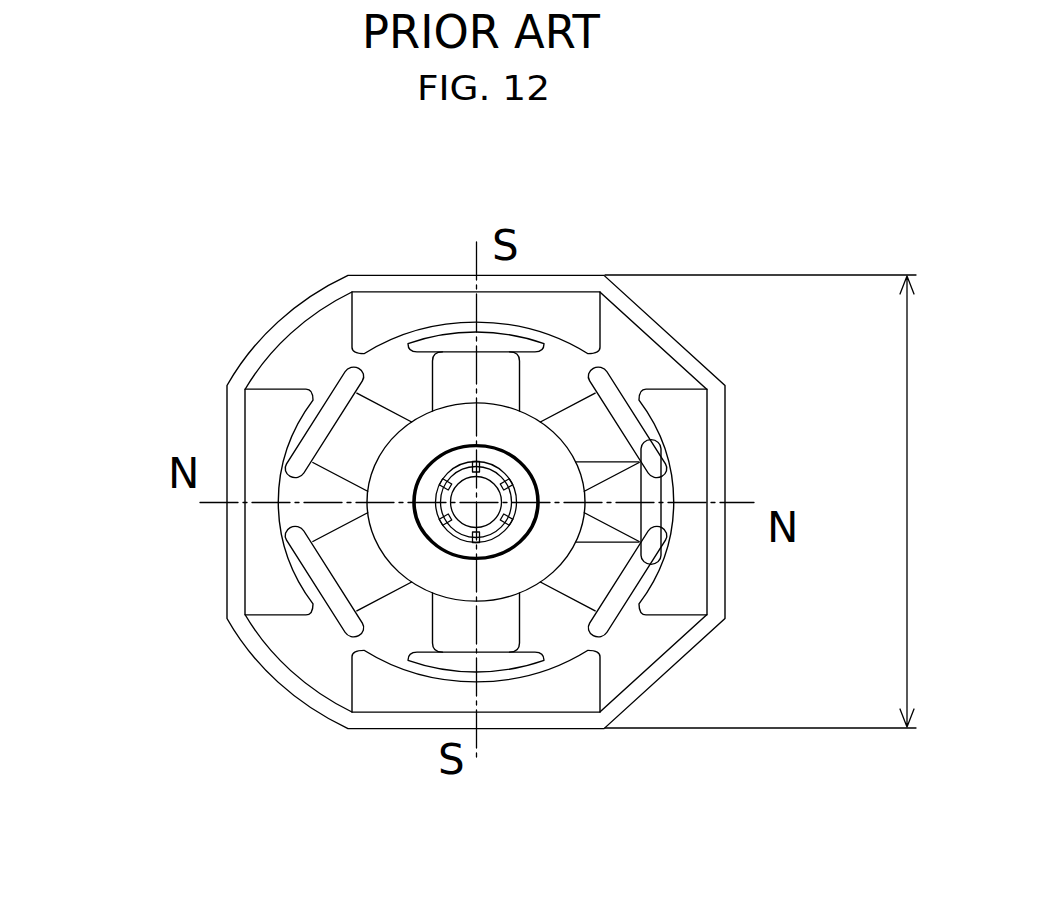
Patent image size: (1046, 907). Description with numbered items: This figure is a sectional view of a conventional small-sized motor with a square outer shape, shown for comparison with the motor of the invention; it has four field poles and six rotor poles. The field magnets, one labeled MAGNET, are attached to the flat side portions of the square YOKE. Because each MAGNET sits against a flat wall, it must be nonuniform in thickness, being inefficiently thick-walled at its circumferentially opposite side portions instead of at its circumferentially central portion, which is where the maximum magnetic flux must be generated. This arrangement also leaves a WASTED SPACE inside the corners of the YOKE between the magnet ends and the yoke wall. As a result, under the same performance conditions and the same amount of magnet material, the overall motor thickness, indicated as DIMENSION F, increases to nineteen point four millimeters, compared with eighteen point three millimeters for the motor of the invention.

The yoke YOKE is at (422, 280).
The field magnet MAGNET is at (552, 298).
The wasted space WASTED SPACE is at (294, 333).
The dimension F DIMENSION F is at (760, 501).